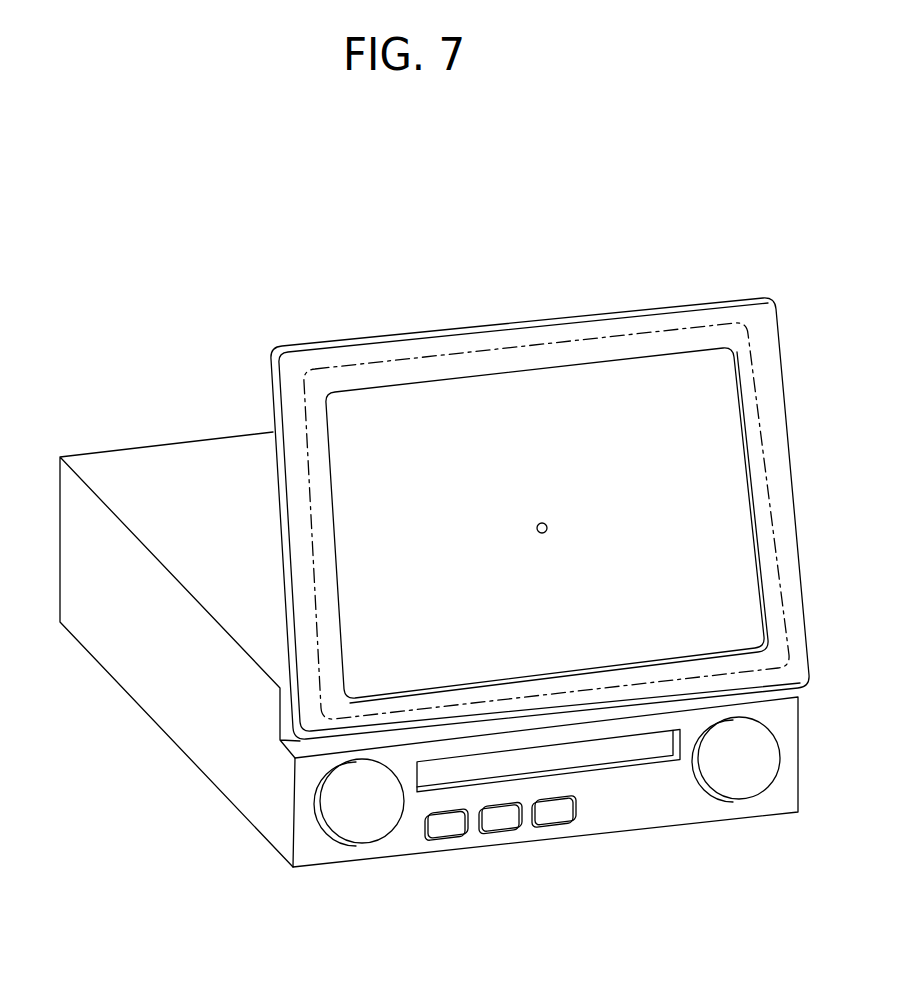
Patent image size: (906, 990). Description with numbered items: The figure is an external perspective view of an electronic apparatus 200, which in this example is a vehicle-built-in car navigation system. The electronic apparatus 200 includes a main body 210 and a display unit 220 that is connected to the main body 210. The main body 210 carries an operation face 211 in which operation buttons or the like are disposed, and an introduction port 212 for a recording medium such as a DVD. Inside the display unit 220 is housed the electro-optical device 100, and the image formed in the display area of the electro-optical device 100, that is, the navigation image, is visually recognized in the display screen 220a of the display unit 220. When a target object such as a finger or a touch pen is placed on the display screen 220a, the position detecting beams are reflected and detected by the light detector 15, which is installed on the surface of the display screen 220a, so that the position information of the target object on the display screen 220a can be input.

The electronic apparatus 200 is at (327, 129).
The electro-optical device 100 is at (433, 353).
The display unit 220 is at (490, 322).
The display screen 220a is at (573, 438).
The light detector 15 is at (547, 531).
The main body 210 is at (200, 777).
The operation face 211 is at (662, 793).
The introduction port 212 is at (471, 768).